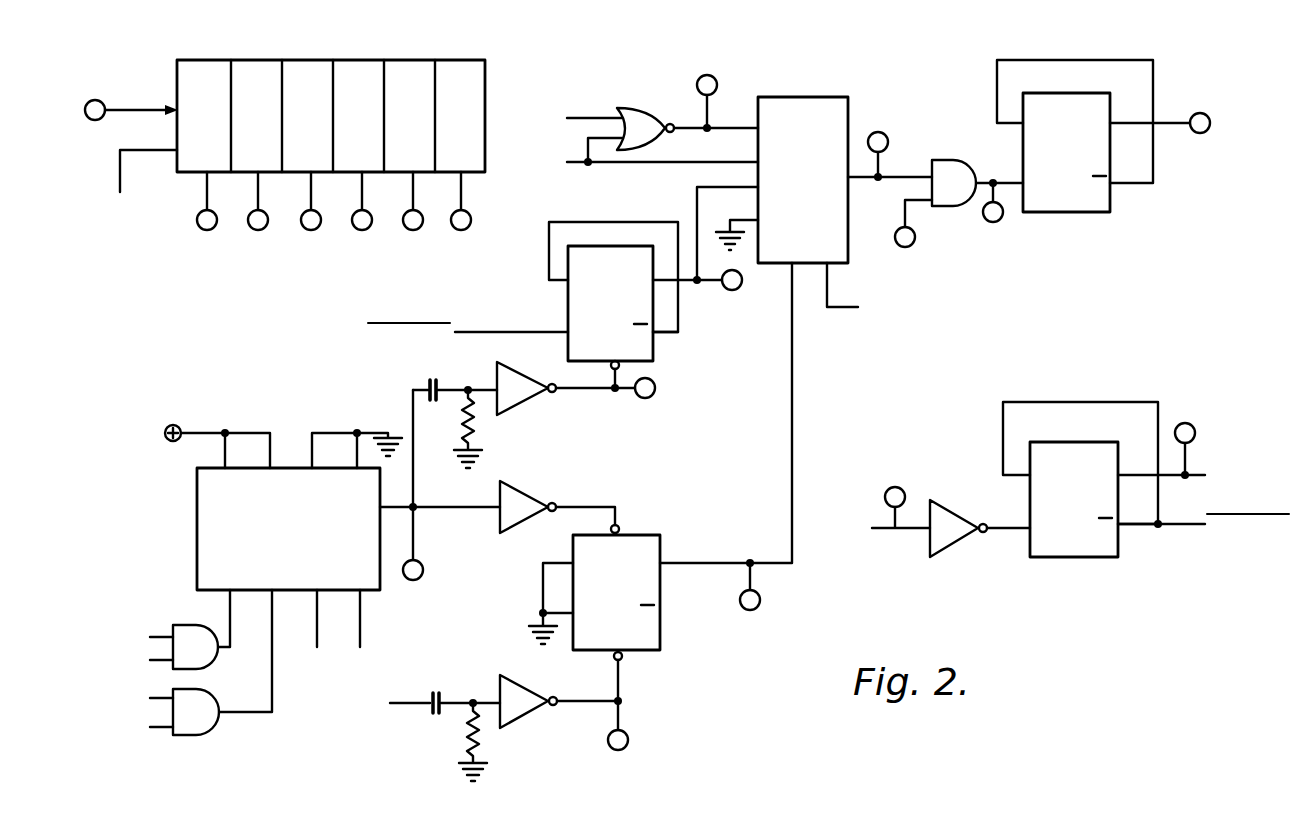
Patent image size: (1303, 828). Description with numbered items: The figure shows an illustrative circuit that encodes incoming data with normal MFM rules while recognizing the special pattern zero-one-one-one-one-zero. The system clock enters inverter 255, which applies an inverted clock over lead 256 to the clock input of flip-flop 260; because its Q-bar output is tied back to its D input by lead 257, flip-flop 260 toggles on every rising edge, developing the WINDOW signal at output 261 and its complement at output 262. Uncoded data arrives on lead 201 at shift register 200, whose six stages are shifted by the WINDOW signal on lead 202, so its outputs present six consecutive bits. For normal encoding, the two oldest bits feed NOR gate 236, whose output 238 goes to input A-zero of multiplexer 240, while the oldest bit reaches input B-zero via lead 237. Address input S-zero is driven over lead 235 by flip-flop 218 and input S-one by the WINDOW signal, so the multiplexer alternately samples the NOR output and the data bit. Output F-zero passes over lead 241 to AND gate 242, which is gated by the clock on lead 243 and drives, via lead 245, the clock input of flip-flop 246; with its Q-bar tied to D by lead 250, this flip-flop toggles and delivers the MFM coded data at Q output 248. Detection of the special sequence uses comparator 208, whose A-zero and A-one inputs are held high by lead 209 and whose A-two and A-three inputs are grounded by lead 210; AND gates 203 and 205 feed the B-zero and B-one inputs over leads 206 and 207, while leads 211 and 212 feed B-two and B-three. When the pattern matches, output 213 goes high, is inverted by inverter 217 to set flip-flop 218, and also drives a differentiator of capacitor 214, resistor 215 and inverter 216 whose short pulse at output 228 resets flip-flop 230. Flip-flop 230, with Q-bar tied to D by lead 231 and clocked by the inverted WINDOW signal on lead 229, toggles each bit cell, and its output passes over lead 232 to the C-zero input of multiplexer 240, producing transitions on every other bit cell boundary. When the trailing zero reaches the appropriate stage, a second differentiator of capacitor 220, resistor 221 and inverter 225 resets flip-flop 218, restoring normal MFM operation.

The shift register 200 is at (313, 60).
The lead 201 is at (140, 112).
The lead 202 is at (146, 150).
The AND gate 203 is at (186, 623).
The AND gate 205 is at (193, 736).
The lead 206 is at (221, 649).
The lead 207 is at (260, 713).
The comparator 208 is at (197, 520).
The lead 209 is at (246, 432).
The lead 210 is at (350, 432).
The lead 211 is at (317, 603).
The lead 212 is at (360, 603).
The output of comparator 213 is at (408, 510).
The capacitor 214 is at (426, 386).
The resistor 215 is at (474, 433).
The inverter 216 is at (523, 378).
The inverter 217 is at (537, 482).
The flip-flop 218 is at (637, 533).
The capacitor 220 is at (433, 692).
The resistor 221 is at (468, 737).
The inverter 225 is at (517, 676).
The output of inverter 228 is at (597, 391).
The lead 229 is at (527, 332).
The flip-flop 230 is at (660, 352).
The lead 231 is at (572, 222).
The multiplexer input line 232 is at (700, 261).
The lead 235 is at (704, 562).
The NOR gate 236 is at (638, 110).
The lead 237 is at (627, 163).
The output of NOR gate 238 is at (733, 124).
The multiplexer 240 is at (798, 97).
The lead 241 is at (910, 175).
The AND gate 242 is at (955, 208).
The lead 243 is at (905, 206).
The lead 245 is at (1000, 176).
The flip-flop 246 is at (1070, 93).
The Q output 248 is at (1129, 120).
The lead 250 is at (1139, 111).
The inverter 255 is at (950, 548).
The lead 256 is at (995, 523).
The lead 257 is at (1146, 464).
The flip-flop 260 is at (1060, 442).
The output 261 is at (1172, 480).
The output 262 is at (1190, 530).